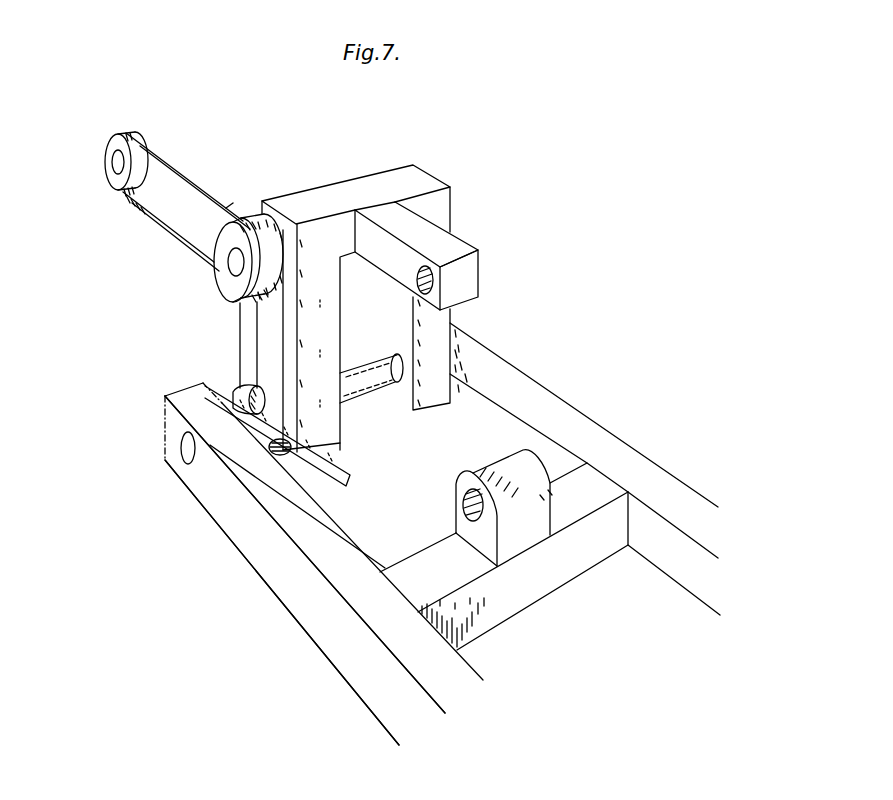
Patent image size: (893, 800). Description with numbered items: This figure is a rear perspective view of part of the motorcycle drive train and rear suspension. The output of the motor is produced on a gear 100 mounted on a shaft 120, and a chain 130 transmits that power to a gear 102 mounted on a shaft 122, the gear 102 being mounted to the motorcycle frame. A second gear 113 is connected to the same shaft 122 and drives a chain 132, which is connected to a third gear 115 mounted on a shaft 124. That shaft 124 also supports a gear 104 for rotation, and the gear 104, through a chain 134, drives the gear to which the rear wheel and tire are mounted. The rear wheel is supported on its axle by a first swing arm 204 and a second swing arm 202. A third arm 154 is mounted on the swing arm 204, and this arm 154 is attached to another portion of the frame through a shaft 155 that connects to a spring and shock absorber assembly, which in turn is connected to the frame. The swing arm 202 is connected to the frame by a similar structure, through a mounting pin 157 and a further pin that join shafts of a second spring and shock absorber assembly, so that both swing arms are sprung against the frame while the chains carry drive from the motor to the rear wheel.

The gear 100 is at (107, 155).
The shaft 120 is at (112, 168).
The chain 130 is at (182, 174).
The gear 102 is at (223, 253).
The shaft 122 is at (243, 293).
The second gear 113 is at (243, 219).
The chain 132 is at (250, 321).
The third arm 154 is at (444, 249).
The shaft 155 is at (430, 281).
The first swing arm 204 is at (322, 405).
The chain 134 is at (327, 468).
The shaft 124 is at (380, 373).
The gear 104 is at (208, 383).
The third gear 115 is at (278, 452).
The second swing arm 202 is at (283, 568).
The mounting pin 157 is at (473, 505).